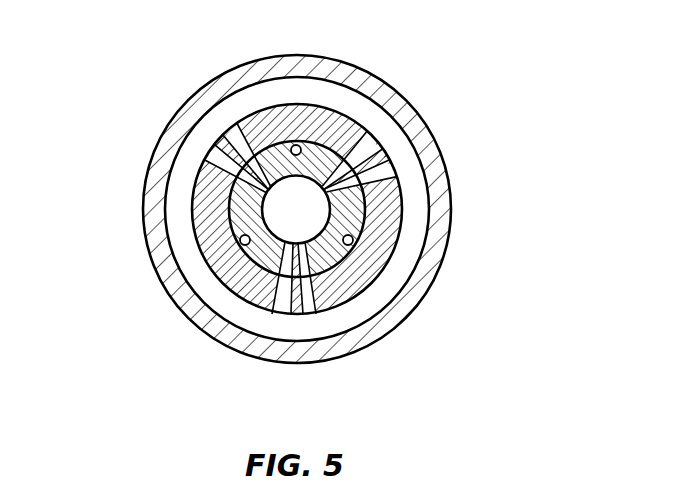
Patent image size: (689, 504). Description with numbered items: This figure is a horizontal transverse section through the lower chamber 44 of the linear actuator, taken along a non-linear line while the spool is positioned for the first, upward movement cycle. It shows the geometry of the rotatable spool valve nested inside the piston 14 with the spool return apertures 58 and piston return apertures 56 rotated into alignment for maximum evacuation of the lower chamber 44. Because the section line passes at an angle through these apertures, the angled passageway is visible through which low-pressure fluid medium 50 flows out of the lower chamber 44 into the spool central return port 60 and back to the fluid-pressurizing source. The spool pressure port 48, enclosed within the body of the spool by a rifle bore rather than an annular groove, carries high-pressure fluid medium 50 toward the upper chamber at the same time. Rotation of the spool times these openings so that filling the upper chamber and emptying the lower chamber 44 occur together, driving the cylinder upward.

The piston 14 is at (277, 215).
The lower chamber 44 is at (416, 181).
The spool pressure port 48 is at (296, 145).
The fluid medium 50 is at (383, 120).
The piston return aperture 56 is at (223, 147).
The spool return aperture 58 is at (260, 173).
The spool central return port 60 is at (279, 220).